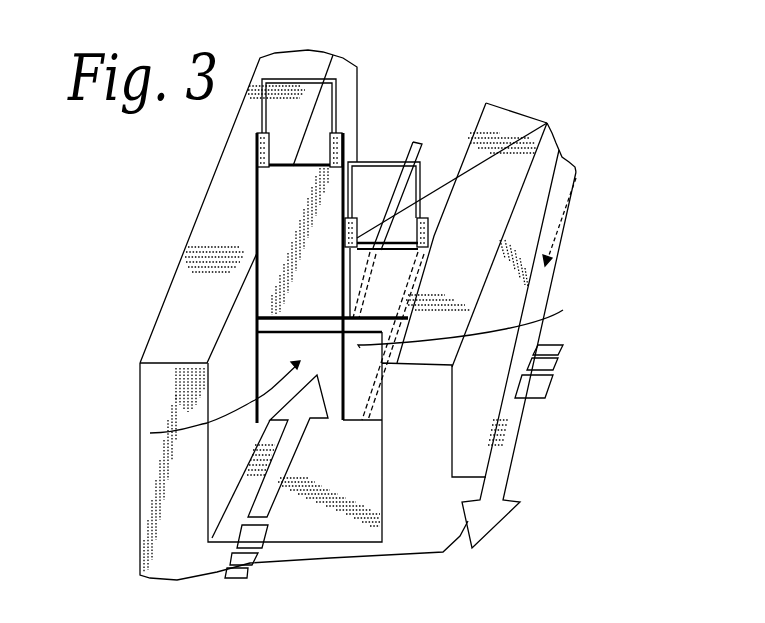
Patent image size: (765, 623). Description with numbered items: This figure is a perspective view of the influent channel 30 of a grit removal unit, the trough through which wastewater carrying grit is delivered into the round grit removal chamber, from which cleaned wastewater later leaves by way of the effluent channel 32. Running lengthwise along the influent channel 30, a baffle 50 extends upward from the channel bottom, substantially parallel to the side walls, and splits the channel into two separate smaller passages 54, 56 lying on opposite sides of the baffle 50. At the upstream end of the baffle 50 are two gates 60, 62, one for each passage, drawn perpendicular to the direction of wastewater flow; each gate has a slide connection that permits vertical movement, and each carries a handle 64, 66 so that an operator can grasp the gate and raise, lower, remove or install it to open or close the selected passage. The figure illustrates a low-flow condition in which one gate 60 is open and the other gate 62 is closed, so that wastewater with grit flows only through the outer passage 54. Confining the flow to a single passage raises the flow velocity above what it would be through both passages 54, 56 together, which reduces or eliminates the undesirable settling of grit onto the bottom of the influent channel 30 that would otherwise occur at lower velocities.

The influent channel 30 is at (334, 472).
The effluent channel 32 is at (577, 188).
The baffle 50 is at (485, 100).
The outer passage 54 is at (150, 433).
The passage 56 is at (433, 205).
The gate 60 is at (307, 285).
The gate 62 is at (563, 310).
The handle 64 is at (280, 77).
The handle 66 is at (380, 160).